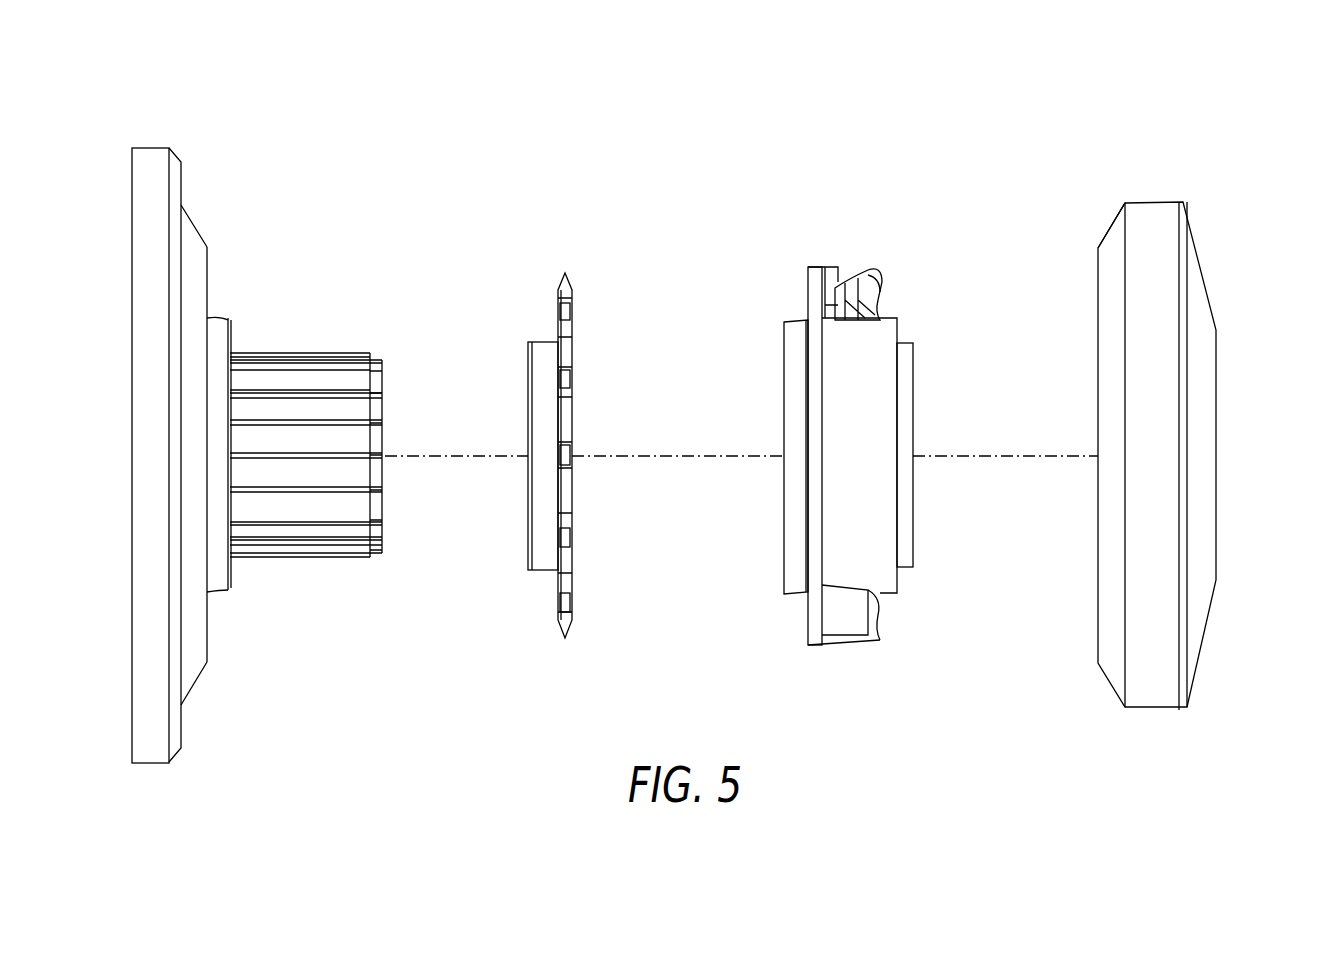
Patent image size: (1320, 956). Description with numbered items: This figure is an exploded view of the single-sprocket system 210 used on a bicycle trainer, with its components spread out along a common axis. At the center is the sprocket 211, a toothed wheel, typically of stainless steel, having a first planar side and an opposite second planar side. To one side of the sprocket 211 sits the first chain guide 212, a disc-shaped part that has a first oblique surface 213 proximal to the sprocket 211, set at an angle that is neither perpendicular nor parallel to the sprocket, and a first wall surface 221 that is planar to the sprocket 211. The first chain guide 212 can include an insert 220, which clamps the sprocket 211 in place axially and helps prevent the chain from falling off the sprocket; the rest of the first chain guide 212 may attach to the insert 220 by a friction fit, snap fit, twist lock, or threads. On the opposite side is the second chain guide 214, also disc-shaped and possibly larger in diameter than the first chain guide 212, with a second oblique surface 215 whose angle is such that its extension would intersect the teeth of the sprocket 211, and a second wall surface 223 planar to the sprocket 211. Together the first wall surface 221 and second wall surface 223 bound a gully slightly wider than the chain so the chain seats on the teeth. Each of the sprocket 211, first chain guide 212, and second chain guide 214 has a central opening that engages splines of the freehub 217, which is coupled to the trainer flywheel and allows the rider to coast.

The single-sprocket system 210 is at (947, 195).
The sprocket 211 is at (564, 272).
The first chain guide 212 is at (1150, 203).
The first oblique surface 213 is at (1110, 228).
The second chain guide 214 is at (168, 143).
The second oblique surface 215 is at (192, 220).
The freehub 217 is at (339, 353).
The insert 220 is at (897, 318).
The first wall surface 221 is at (808, 290).
The second wall surface 223 is at (207, 290).